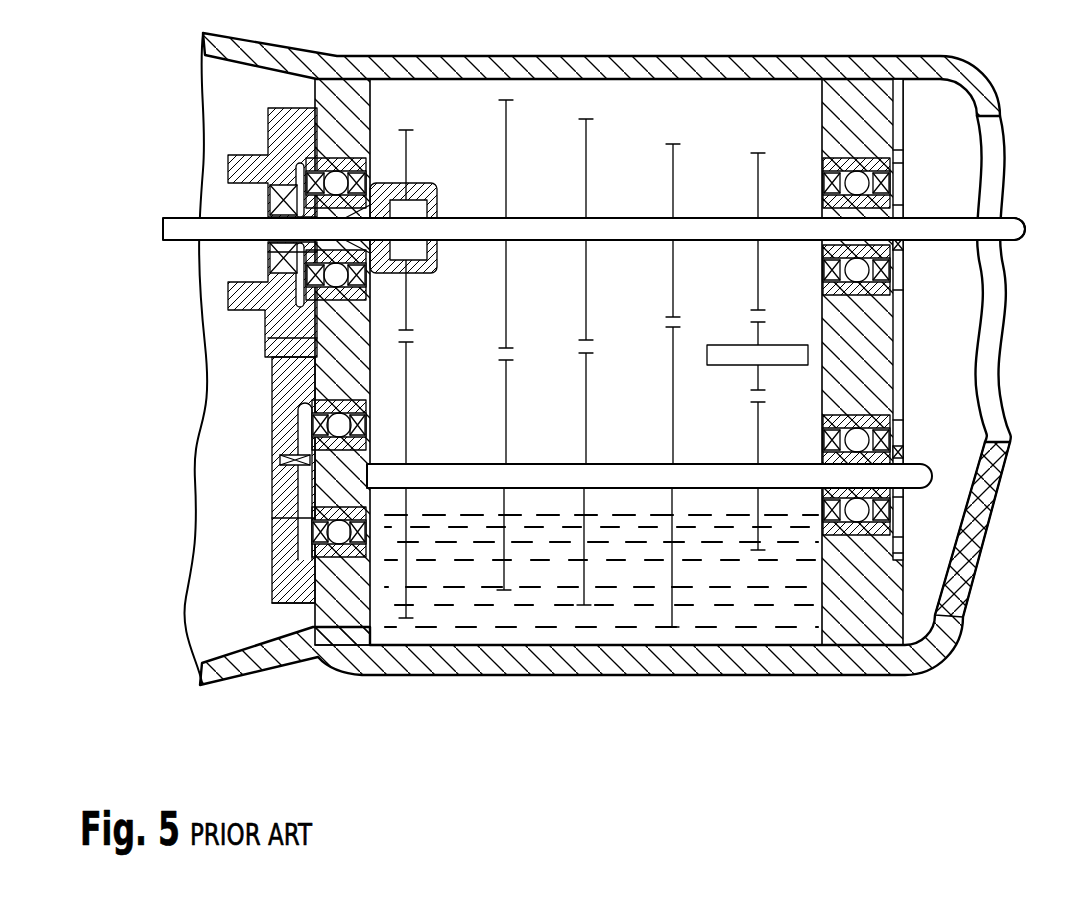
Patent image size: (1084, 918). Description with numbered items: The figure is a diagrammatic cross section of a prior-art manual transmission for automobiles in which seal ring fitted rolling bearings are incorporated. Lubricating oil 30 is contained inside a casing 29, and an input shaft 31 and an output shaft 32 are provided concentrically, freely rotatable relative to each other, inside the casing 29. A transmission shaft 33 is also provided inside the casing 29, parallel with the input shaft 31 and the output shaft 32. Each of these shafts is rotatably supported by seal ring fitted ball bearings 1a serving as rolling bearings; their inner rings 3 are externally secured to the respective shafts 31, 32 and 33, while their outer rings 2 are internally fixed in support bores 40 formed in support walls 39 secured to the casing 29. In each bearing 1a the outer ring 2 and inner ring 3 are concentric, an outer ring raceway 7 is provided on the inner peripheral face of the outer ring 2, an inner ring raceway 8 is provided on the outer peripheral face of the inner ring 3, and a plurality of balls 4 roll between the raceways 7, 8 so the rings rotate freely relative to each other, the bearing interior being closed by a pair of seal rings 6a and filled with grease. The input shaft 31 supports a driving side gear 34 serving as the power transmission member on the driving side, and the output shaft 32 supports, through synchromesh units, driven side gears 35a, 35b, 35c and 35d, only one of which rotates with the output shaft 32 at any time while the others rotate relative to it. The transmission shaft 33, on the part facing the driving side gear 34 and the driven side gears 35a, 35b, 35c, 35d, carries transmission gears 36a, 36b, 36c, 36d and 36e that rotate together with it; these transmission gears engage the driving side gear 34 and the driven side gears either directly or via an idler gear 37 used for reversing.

The seal ring fitted ball bearing 1a is at (296, 313).
The outer ring 2 is at (300, 338).
The inner ring 3 is at (270, 252).
The balls 4 is at (330, 176).
The seal ring 6a is at (297, 153).
The outer ring raceway 7 is at (305, 115).
The inner ring raceway 8 is at (290, 207).
The casing 29 is at (428, 665).
The lubricating oil 30 is at (618, 600).
The input shaft 31 is at (195, 225).
The output shaft 32 is at (1000, 220).
The transmission shaft 33 is at (935, 473).
The driving side gear 34 is at (410, 140).
The driven side gear 35a is at (506, 120).
The driven side gear 35b is at (587, 130).
The driven side gear 35c is at (673, 153).
The driven side gear 35d is at (758, 167).
The transmission gear 36a is at (400, 615).
The transmission gear 36b is at (500, 556).
The transmission gear 36c is at (573, 573).
The transmission gear 36d is at (667, 597).
The transmission gear 36e is at (750, 533).
The idler gear 37 is at (755, 375).
The support wall 39 is at (345, 97).
The support bore 40 is at (327, 167).